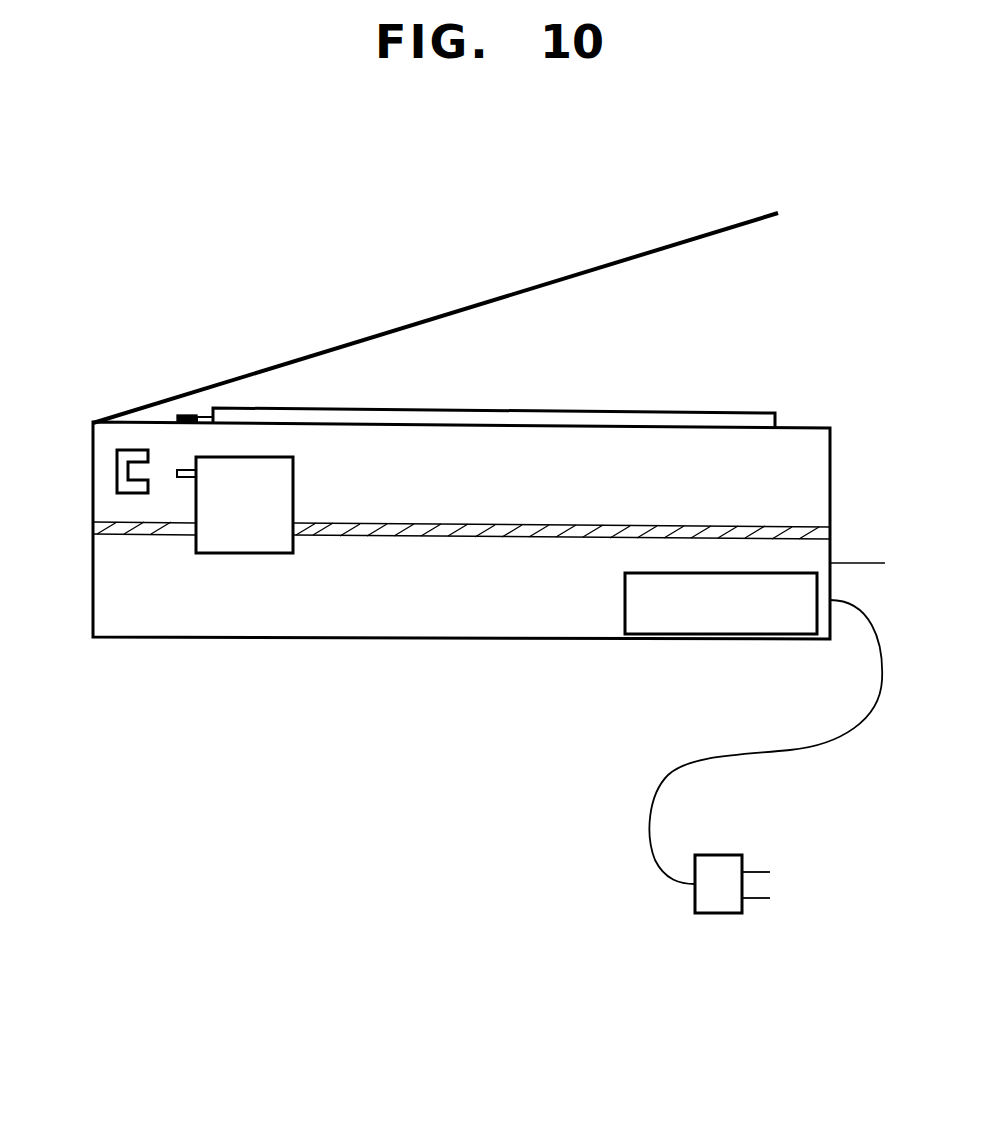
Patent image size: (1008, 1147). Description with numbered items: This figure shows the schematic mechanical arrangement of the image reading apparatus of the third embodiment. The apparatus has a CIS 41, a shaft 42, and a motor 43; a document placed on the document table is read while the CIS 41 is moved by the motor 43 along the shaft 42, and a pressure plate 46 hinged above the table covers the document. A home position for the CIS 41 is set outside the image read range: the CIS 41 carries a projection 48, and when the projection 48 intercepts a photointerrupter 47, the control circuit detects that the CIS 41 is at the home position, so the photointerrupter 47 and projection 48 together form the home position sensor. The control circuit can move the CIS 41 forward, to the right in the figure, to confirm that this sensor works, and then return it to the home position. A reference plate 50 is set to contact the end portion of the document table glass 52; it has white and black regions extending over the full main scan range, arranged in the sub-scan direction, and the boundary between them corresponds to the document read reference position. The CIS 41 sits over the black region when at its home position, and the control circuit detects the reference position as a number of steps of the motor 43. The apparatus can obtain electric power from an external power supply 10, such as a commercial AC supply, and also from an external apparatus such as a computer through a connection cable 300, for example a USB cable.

The external power supply 10 is at (738, 855).
The CIS 41 is at (223, 553).
The shaft 42 is at (423, 537).
The motor 43 is at (718, 632).
The pressure plate 46 is at (350, 337).
The photointerrupter 47 is at (130, 450).
The projection 48 is at (183, 478).
The reference plate 50 is at (190, 415).
The document table glass 52 is at (523, 410).
The connection cable 300 is at (851, 561).